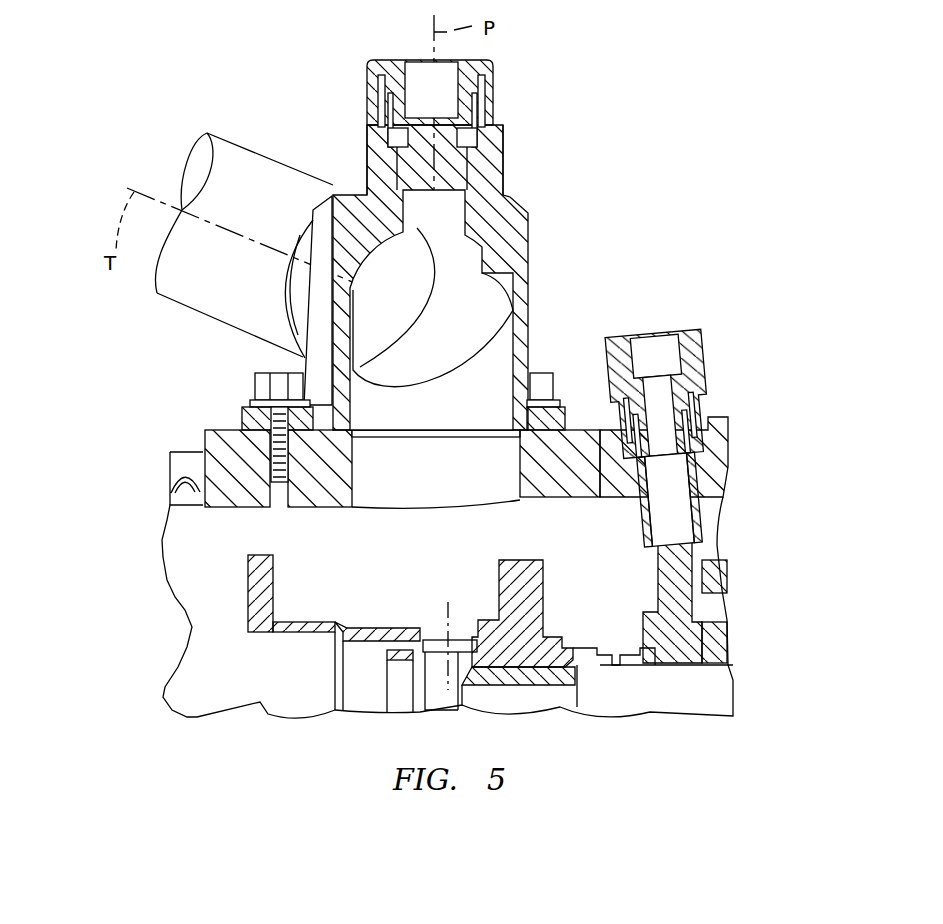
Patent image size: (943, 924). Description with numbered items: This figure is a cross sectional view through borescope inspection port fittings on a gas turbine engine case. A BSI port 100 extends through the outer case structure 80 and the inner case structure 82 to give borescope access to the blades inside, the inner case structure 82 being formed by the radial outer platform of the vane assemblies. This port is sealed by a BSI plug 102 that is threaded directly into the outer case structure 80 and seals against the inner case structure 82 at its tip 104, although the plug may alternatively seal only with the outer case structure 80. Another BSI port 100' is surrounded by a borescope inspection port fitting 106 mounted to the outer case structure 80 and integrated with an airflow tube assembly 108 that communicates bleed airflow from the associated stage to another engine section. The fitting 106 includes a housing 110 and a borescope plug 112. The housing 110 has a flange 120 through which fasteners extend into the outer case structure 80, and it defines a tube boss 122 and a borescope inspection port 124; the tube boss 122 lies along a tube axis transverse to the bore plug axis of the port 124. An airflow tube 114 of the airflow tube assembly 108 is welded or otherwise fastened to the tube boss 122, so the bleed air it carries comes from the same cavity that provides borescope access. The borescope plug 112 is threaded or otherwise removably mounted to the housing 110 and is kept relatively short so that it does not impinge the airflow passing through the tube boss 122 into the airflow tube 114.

The outer case structure 80 is at (733, 437).
The inner case structure 82 is at (738, 643).
The BSI port 100 is at (506, 462).
The BSI port 100' is at (560, 418).
The BSI plug 102 is at (695, 352).
The tip 104 is at (695, 664).
The borescope inspection port fitting 106 is at (562, 244).
The airflow tube assembly 108 is at (141, 167).
The housing 110 is at (492, 200).
The borescope plug 112 is at (507, 100).
The airflow tube 114 is at (237, 163).
The flange 120 is at (252, 404).
The tube boss 122 is at (297, 318).
The borescope inspection port 124 is at (525, 352).